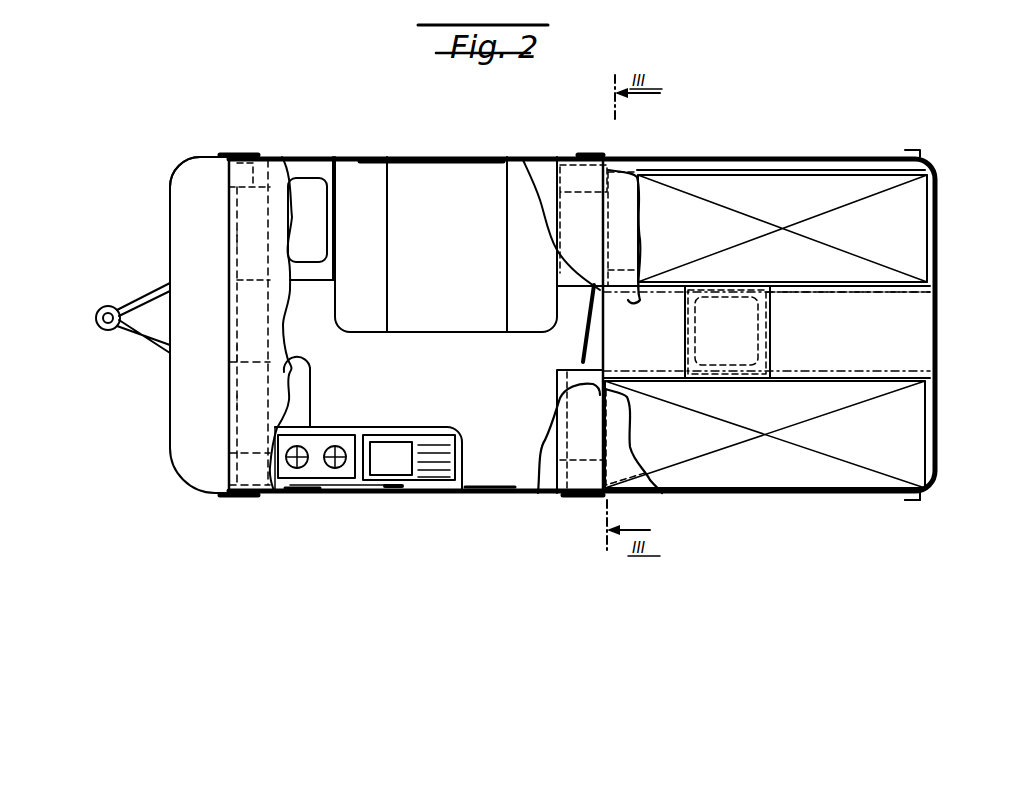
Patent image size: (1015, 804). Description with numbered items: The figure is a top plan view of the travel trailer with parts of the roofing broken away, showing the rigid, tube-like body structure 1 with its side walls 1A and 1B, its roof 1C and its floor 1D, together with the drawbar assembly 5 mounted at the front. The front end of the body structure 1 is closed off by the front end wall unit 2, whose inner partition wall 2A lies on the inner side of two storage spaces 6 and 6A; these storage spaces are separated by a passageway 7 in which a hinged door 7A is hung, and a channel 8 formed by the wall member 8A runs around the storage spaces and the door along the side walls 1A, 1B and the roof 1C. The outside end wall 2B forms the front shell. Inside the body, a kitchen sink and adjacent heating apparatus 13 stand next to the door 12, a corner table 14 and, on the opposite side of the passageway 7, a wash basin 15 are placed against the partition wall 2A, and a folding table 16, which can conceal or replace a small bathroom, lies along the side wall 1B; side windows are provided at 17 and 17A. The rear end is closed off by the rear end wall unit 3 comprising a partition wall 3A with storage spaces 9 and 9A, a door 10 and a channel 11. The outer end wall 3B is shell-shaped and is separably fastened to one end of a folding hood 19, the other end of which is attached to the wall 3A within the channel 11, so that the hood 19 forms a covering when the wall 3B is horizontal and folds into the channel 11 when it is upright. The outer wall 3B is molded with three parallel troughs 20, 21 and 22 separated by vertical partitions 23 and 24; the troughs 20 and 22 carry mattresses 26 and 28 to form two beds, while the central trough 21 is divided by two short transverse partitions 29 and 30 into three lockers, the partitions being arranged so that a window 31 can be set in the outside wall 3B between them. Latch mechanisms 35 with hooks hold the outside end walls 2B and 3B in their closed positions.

The body structure 1 is at (438, 500).
The side wall 1A is at (281, 494).
The side wall 1B is at (348, 157).
The roof 1C is at (284, 327).
The floor 1D is at (470, 372).
The front end wall unit 2 is at (165, 178).
The inner partition wall 2A is at (275, 388).
The front outside end wall 2B is at (212, 182).
The rear end wall unit 3 is at (770, 158).
The rear partition wall 3A is at (550, 395).
The rear outside end wall 3B is at (810, 166).
The drawbar assembly 5 is at (148, 300).
The storage space 6 is at (245, 401).
The storage space 6A is at (246, 240).
The passageway 7 is at (236, 276).
The hinged door 7A is at (236, 353).
The channel 8 is at (226, 170).
The wall member 8A is at (258, 160).
The storage space 9 is at (572, 383).
The storage space 9A is at (570, 277).
The door 10 is at (585, 338).
The channel 11 is at (576, 160).
The door 12 is at (513, 494).
The kitchen sink and heating apparatus 13 is at (380, 490).
The corner table 14 is at (296, 413).
The wash basin 15 is at (310, 193).
The folding table 16 is at (408, 233).
The side window 17 is at (390, 490).
The side window 17A is at (481, 159).
The folding hood 19 is at (630, 237).
The trough 20 is at (818, 493).
The central trough 21 is at (934, 320).
The trough 22 is at (934, 212).
The vertical partition 23 is at (870, 381).
The vertical partition 24 is at (870, 288).
The mattress 26 is at (735, 465).
The mattress 28 is at (727, 196).
The transverse partition 29 is at (684, 327).
The transverse partition 30 is at (770, 330).
The window 31 is at (715, 363).
The latch mechanism 35 is at (236, 148).